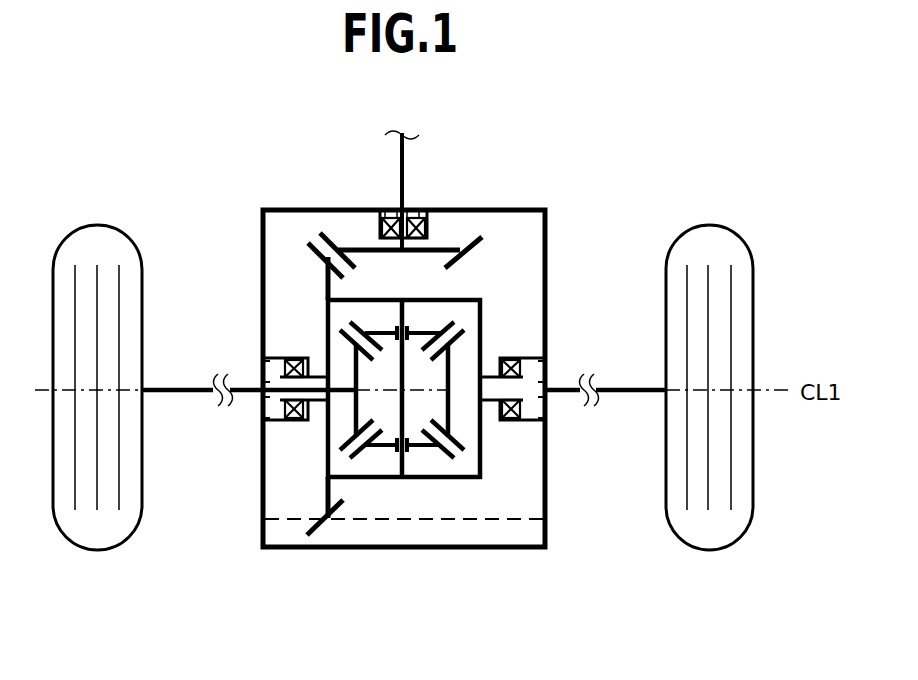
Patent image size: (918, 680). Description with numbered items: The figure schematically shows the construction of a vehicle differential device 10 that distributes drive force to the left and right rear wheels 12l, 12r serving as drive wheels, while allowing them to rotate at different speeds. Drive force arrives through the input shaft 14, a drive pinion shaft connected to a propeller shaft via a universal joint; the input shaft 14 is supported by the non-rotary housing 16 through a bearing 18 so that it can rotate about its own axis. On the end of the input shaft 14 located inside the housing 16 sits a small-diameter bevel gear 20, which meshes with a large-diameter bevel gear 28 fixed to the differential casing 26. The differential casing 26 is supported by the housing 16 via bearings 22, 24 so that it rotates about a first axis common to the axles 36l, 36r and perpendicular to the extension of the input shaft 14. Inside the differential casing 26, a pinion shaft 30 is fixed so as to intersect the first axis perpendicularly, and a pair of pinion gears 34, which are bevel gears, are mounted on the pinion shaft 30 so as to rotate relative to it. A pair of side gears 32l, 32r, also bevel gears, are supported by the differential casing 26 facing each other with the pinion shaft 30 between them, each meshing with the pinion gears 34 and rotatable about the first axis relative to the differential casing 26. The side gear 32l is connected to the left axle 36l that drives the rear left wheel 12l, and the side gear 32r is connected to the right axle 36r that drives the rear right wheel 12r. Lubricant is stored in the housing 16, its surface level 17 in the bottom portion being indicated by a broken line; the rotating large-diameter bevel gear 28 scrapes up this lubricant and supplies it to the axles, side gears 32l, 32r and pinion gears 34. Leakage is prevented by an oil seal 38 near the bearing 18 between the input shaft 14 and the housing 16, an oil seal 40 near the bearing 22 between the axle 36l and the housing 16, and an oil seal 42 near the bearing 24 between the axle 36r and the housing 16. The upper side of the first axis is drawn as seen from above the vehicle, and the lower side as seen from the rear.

The differential device 10 is at (465, 628).
The rear left wheel 12l is at (92, 538).
The rear right wheel 12r is at (703, 538).
The input shaft 14 is at (408, 152).
The housing 16 is at (545, 240).
The surface level 17 is at (522, 519).
The bearing 18 is at (383, 220).
The small-diameter bevel gear 20 is at (318, 238).
The bearing 22 is at (286, 358).
The bearing 24 is at (503, 357).
The differential casing 26 is at (482, 313).
The large-diameter bevel gear 28 is at (317, 262).
The pinion shaft 30 is at (407, 462).
The side gear 32l is at (350, 447).
The side gear 32r is at (455, 447).
The pinion gears 34 is at (443, 325).
The left axle 36l is at (175, 388).
The right axle 36r is at (620, 388).
The oil seal 38 is at (392, 215).
The oil seal 40 is at (262, 407).
The oil seal 42 is at (545, 405).